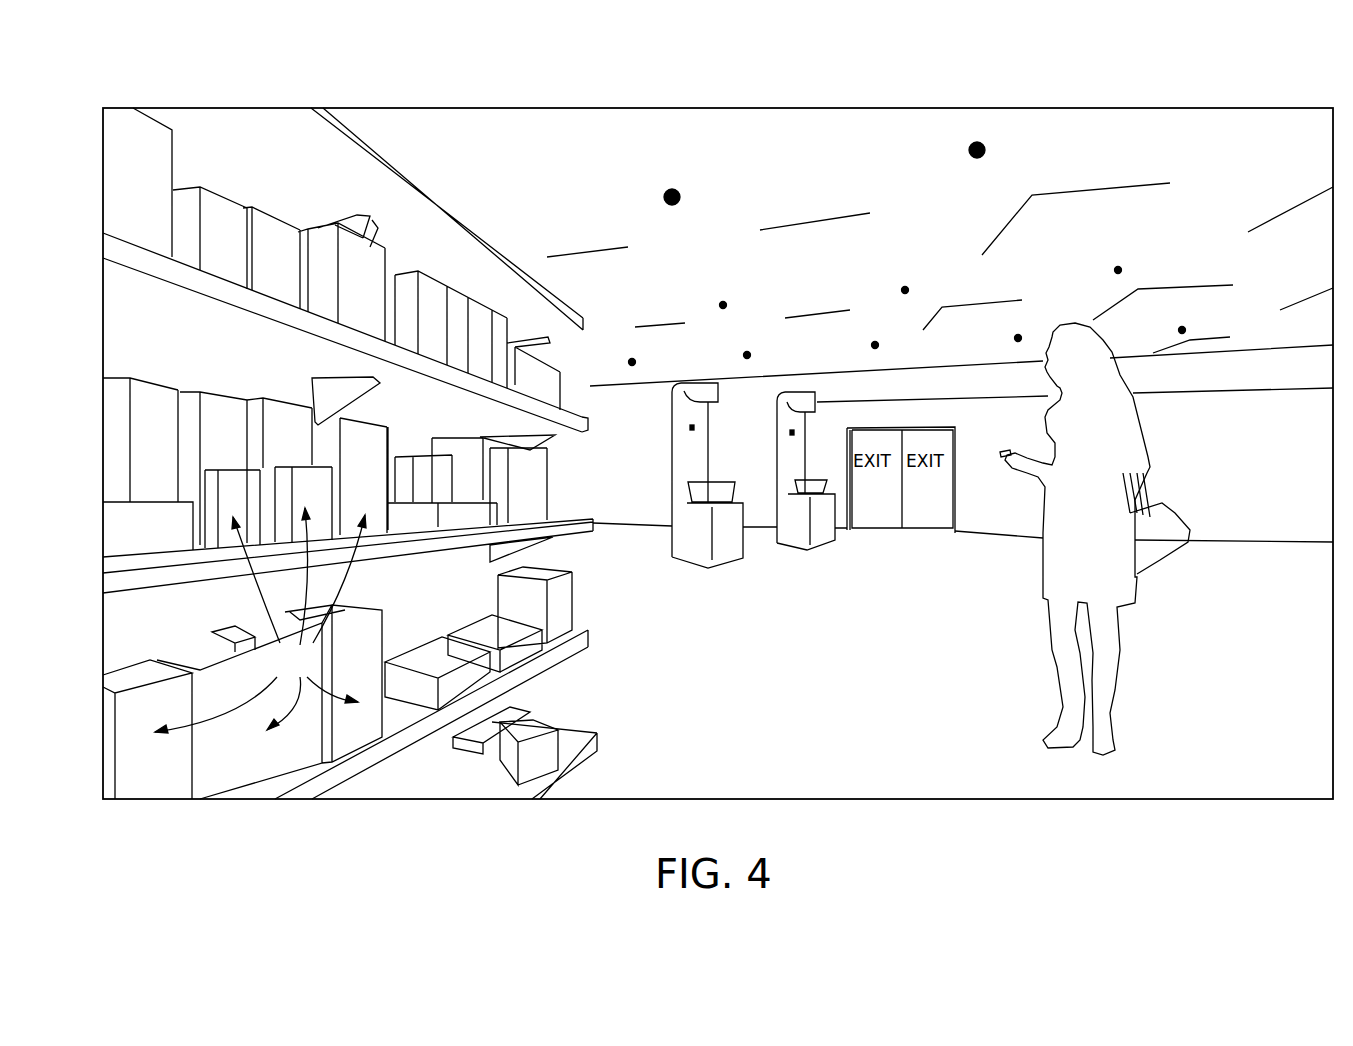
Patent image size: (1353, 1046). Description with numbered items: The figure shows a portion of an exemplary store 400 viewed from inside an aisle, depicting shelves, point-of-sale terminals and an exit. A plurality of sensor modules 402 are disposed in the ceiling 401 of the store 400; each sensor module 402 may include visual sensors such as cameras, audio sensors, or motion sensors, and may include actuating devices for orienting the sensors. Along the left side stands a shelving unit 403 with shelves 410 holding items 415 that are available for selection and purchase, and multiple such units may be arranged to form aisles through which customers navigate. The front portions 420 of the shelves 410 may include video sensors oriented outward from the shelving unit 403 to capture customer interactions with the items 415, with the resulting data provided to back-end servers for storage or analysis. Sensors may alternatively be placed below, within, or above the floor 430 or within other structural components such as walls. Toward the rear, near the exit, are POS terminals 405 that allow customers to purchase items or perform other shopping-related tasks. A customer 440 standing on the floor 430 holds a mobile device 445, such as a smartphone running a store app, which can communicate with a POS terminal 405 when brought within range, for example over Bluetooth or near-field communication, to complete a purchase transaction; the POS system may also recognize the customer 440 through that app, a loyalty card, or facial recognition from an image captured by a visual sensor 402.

The store 400 is at (1230, 72).
The ceiling 401 is at (1233, 165).
The sensor module 402 is at (679, 190).
The shelving unit 403 is at (387, 453).
The POS terminal 405 is at (705, 375).
The shelf 410 is at (470, 233).
The item 415 is at (260, 620).
The front portion of shelf 420 is at (562, 412).
The floor 430 is at (1175, 752).
The customer 440 is at (1150, 440).
The mobile device 445 is at (995, 450).